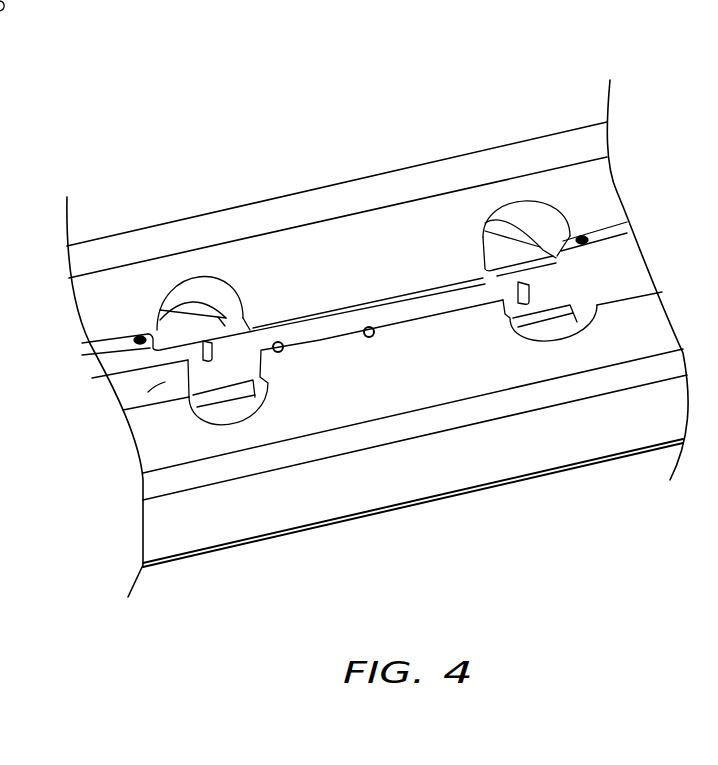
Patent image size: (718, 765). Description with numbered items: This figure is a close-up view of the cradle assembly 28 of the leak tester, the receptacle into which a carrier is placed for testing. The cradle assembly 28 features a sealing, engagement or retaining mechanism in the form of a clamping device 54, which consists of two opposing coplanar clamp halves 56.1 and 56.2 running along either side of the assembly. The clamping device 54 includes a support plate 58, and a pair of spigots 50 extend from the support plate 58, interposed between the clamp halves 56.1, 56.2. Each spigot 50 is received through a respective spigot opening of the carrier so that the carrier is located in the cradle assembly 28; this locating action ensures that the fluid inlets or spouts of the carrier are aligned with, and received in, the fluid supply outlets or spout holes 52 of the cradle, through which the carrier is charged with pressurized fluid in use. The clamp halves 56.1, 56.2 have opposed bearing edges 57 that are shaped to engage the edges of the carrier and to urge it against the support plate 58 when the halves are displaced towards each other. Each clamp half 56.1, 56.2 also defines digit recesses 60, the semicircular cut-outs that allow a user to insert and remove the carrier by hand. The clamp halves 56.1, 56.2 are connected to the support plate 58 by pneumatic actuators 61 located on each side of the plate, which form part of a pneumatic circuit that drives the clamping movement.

The cradle assembly 28 is at (256, 92).
The spigot 50 is at (204, 353).
The spout hole 52 is at (283, 352).
The clamping device 54 is at (142, 305).
The clamp half 56.1 is at (440, 220).
The clamp half 56.2 is at (627, 413).
The bearing edge 57 is at (330, 311).
The support plate 58 is at (123, 408).
The digit recess 60 is at (202, 292).
The pneumatic actuator 61 is at (134, 338).